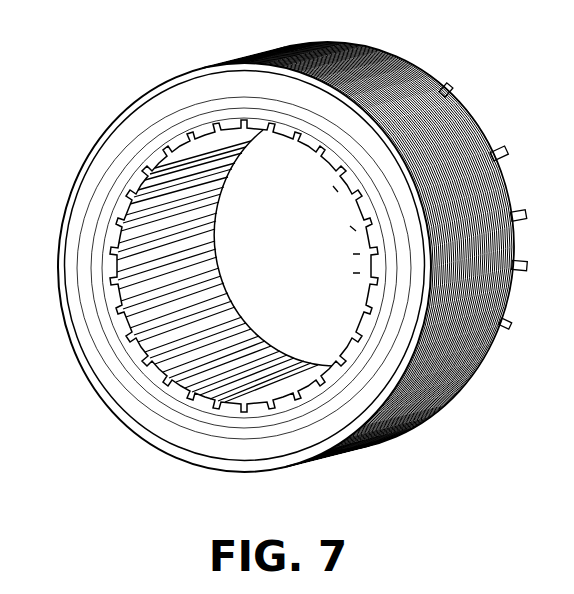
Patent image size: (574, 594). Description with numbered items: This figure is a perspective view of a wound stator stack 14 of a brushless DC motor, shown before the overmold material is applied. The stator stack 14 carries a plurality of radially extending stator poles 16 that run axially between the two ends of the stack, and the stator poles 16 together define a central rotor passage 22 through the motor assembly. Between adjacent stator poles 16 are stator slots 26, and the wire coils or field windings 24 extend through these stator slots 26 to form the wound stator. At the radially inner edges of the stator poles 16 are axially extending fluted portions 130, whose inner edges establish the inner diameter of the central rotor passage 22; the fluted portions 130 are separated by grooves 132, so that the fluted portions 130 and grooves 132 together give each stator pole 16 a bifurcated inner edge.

The stator stack 14 is at (441, 403).
The stator poles 16 is at (185, 303).
The central rotor passage 22 is at (287, 182).
The field windings 24 is at (175, 105).
The stator slots 26 is at (158, 168).
The fluted portions 130 is at (350, 228).
The grooves 132 is at (353, 272).